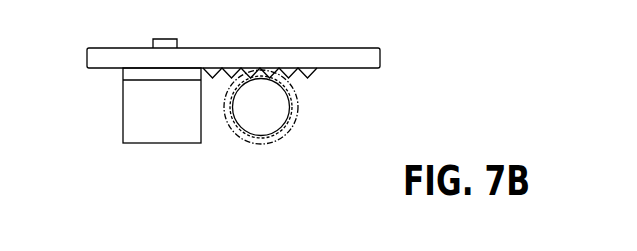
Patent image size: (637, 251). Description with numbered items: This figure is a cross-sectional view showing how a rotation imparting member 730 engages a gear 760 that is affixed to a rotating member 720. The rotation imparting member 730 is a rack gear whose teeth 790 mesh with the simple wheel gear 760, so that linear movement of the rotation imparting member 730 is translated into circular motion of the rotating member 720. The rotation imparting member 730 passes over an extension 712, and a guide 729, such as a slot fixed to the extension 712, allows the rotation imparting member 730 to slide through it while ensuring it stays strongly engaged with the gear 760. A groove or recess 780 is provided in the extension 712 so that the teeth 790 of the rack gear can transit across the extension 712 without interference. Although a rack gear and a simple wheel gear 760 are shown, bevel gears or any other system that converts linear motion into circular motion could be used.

The extension 712 is at (123, 113).
The rotating member 720 is at (257, 117).
The guide 729 is at (181, 46).
The rotation imparting member 730 is at (277, 48).
The gear 760 is at (297, 117).
The groove or recess 780 is at (123, 74).
The teeth 790 is at (313, 75).